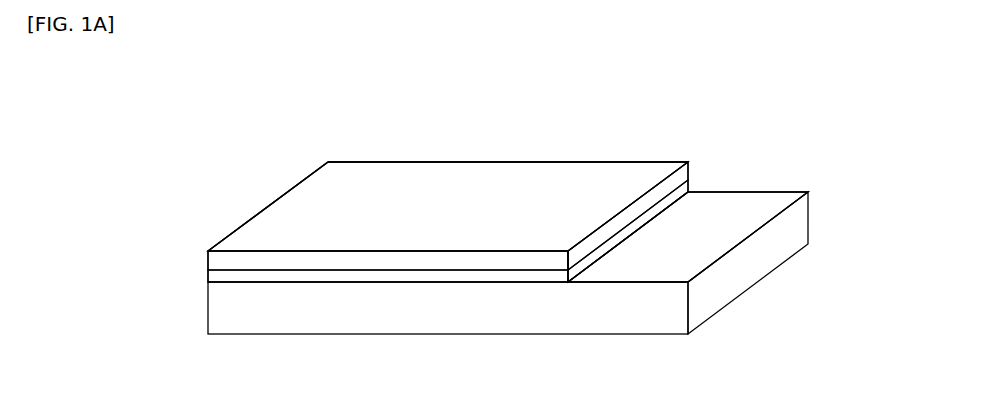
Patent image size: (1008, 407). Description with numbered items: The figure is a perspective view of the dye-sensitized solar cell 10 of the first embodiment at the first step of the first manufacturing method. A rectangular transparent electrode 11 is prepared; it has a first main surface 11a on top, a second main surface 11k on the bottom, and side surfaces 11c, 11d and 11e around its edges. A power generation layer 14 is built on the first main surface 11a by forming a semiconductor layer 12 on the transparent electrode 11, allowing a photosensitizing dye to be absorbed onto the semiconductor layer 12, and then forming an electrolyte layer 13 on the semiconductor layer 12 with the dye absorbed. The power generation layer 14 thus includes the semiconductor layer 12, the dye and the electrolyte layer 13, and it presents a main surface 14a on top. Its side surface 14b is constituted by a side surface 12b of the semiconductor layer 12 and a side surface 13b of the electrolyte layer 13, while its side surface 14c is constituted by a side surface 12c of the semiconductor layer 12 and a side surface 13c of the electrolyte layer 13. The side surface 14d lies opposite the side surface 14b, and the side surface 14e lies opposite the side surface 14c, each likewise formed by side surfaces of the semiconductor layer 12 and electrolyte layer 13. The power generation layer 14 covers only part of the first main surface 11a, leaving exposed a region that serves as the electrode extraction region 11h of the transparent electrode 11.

The dye-sensitized solar cell 10 is at (108, 92).
The transparent electrode 11 is at (809, 217).
The first main surface 11a is at (773, 203).
The side surface 11c is at (277, 315).
The side surface 11d is at (230, 207).
The side surface 11e is at (455, 156).
The electrode extraction region 11h is at (740, 236).
The second main surface 11k is at (738, 318).
The semiconductor layer 12 is at (690, 185).
The side surface of semiconductor layer 12b is at (659, 208).
The side surface of semiconductor layer 12c is at (220, 277).
The electrolyte layer 13 is at (690, 168).
The side surface of electrolyte layer 13b is at (630, 213).
The side surface of electrolyte layer 13c is at (220, 261).
The power generation layer 14 is at (793, 115).
The main surface of power generation layer 14a is at (532, 183).
The side surface of power generation layer 14b is at (745, 54).
The side surface of power generation layer 14c is at (103, 237).
The side surface of power generation layer 14d is at (235, 206).
The side surface of power generation layer 14e is at (508, 115).